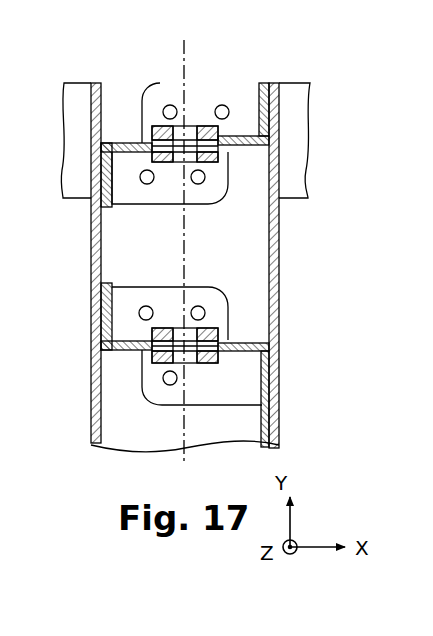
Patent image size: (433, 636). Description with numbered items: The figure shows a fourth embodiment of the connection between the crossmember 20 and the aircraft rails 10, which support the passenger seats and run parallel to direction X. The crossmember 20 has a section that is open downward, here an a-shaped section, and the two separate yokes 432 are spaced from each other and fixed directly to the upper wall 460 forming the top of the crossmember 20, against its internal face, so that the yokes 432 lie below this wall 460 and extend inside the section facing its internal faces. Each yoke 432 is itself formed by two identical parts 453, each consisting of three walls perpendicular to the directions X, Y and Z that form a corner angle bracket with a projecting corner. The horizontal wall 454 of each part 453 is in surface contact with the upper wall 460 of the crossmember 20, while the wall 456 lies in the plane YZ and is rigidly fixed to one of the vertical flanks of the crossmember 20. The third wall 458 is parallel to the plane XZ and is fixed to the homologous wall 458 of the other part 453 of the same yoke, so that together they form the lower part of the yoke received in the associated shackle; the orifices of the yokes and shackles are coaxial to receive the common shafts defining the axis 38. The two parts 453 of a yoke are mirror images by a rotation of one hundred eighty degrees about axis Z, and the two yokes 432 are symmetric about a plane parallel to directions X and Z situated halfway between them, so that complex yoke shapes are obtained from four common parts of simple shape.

The rail 10 is at (298, 182).
The crossmember 20 is at (139, 430).
The axis 38 is at (184, 50).
The yoke 432 is at (229, 139).
The part 453 is at (204, 98).
The horizontal wall 454 is at (225, 393).
The wall 456 is at (272, 388).
The third wall 458 is at (128, 143).
The upper wall 460 is at (237, 252).